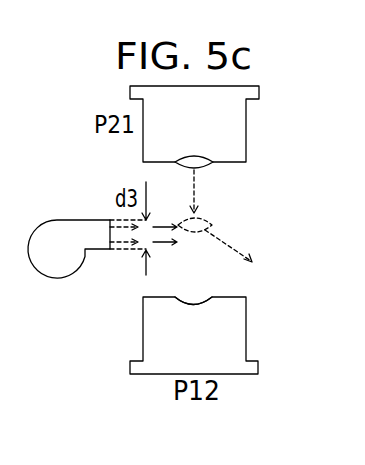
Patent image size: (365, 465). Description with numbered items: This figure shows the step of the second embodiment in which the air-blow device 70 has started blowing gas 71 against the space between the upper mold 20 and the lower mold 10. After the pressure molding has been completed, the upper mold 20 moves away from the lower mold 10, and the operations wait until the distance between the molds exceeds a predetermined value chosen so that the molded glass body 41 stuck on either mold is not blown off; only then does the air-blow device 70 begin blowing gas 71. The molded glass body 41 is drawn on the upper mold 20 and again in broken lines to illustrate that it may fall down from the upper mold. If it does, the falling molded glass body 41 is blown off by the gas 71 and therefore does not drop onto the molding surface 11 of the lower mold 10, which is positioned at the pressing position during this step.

The lower mold 10 is at (246, 325).
The molding surface 11 is at (197, 301).
The upper mold 20 is at (246, 128).
The molded glass body 41 is at (198, 157).
The air-blow device 70 is at (52, 278).
The gas 71 is at (120, 223).